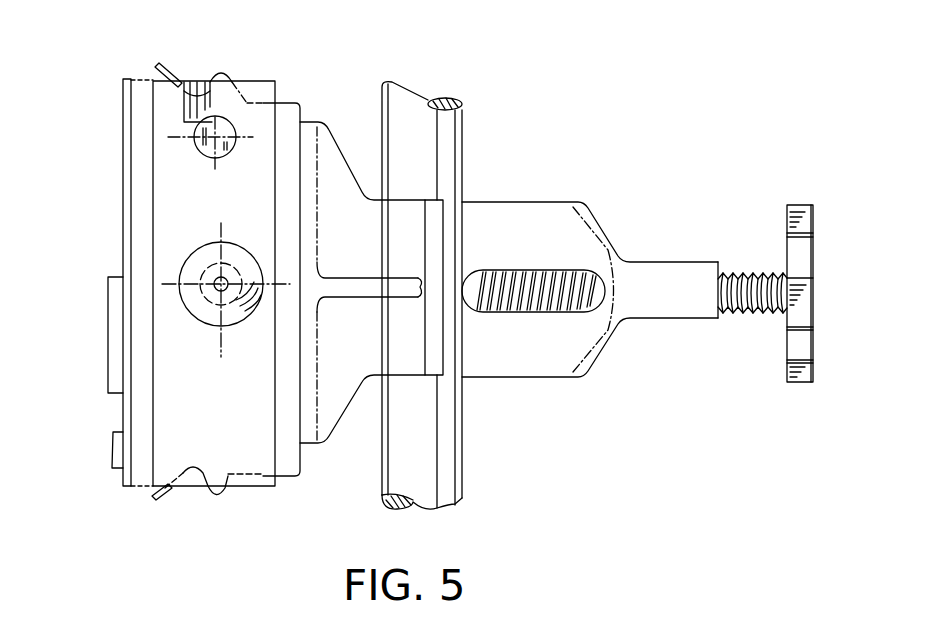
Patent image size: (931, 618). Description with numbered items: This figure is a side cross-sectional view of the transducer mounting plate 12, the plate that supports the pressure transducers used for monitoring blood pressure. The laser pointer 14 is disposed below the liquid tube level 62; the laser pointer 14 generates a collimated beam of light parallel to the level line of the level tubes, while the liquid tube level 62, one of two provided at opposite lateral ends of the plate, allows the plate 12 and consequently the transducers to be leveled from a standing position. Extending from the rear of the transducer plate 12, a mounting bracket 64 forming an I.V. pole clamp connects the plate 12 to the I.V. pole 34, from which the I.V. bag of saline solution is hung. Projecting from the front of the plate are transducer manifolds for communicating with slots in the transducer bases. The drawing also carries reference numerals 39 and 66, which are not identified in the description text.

The transducer mounting plate 12 is at (123, 417).
The laser pointer 14 is at (190, 308).
The I.V. pole 34 is at (462, 148).
The mounting block 39 is at (117, 395).
The liquid tube level 62 is at (202, 150).
The mounting bracket 64 is at (537, 378).
The spring wire 66 is at (170, 80).